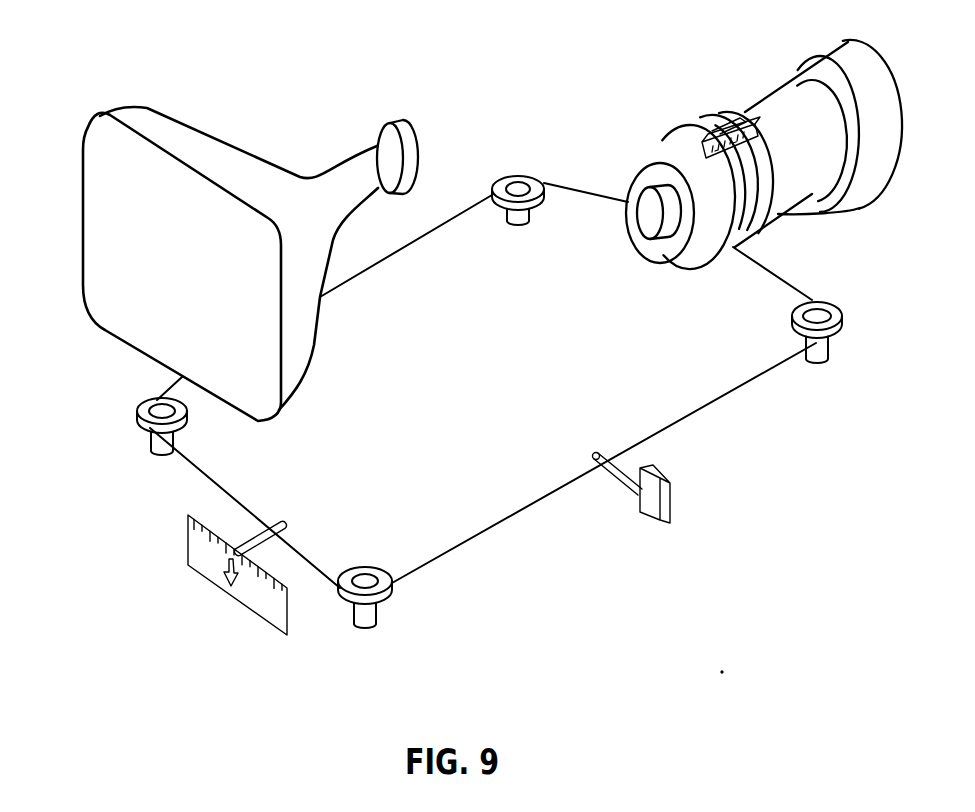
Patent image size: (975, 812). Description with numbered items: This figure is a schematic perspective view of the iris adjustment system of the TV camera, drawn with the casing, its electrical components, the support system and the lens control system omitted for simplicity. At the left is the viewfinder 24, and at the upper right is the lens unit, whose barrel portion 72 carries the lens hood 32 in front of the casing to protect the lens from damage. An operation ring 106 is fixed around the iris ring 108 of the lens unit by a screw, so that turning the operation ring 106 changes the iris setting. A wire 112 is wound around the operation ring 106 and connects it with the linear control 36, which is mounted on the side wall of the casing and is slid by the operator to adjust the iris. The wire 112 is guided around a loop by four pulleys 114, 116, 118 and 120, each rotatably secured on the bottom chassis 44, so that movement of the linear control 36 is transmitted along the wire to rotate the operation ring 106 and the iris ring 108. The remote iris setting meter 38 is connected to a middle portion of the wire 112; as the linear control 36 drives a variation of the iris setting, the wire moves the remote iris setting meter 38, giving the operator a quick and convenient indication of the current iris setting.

The viewfinder 24 is at (100, 228).
The lens hood 32 is at (882, 83).
The lens barrel 72 is at (787, 110).
The operation ring 106 is at (733, 120).
The iris ring 108 is at (710, 237).
The wire 112 is at (768, 268).
The pulley 114 is at (383, 600).
The pulley 116 is at (843, 317).
The pulley 118 is at (522, 173).
The pulley 120 is at (145, 403).
The bottom chassis 44 is at (720, 435).
The linear control 36 is at (660, 522).
The remote iris setting meter 38 is at (247, 600).